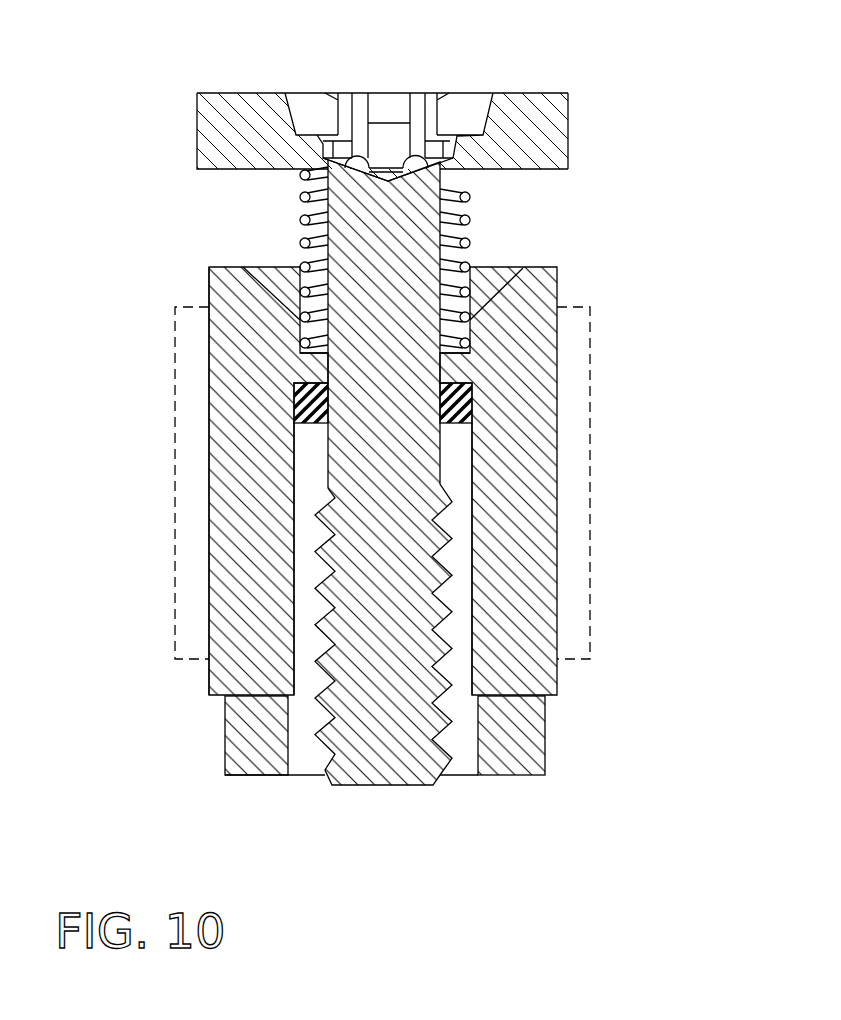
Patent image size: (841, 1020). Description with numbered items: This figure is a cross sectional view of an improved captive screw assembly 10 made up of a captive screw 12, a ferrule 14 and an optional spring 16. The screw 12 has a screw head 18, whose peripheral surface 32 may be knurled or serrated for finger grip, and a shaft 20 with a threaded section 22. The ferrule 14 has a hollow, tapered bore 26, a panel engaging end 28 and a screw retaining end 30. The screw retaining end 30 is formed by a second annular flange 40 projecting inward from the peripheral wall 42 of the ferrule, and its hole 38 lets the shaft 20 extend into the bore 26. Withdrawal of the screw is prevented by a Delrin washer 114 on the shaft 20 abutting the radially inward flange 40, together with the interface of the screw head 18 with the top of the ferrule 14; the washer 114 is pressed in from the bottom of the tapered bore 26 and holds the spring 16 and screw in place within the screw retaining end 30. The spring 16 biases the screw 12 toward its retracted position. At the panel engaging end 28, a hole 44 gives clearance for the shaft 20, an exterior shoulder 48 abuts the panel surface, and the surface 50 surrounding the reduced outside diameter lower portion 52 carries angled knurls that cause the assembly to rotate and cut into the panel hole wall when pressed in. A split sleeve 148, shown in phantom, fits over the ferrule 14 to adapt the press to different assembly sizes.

The captive screw assembly 10 is at (370, 444).
The captive screw 12 is at (454, 257).
The ferrule 14 is at (369, 453).
The spring 16 is at (470, 240).
The screw head 18 is at (432, 95).
The shaft 20 is at (440, 463).
The threaded section 22 is at (445, 641).
The bore 26 is at (294, 534).
The panel engaging end 28 is at (385, 787).
The screw retaining end 30 is at (389, 453).
The peripheral surface 32 is at (568, 143).
The hole 38 is at (482, 285).
The second annular flange 40 is at (466, 341).
The peripheral wall 42 is at (477, 524).
The hole 44 is at (302, 740).
The exterior shoulder 48 is at (544, 697).
The surface 50 is at (463, 775).
The reduced outside diameter lower portion 52 is at (260, 775).
The washer 114 is at (472, 403).
The split sleeve 148 is at (177, 437).